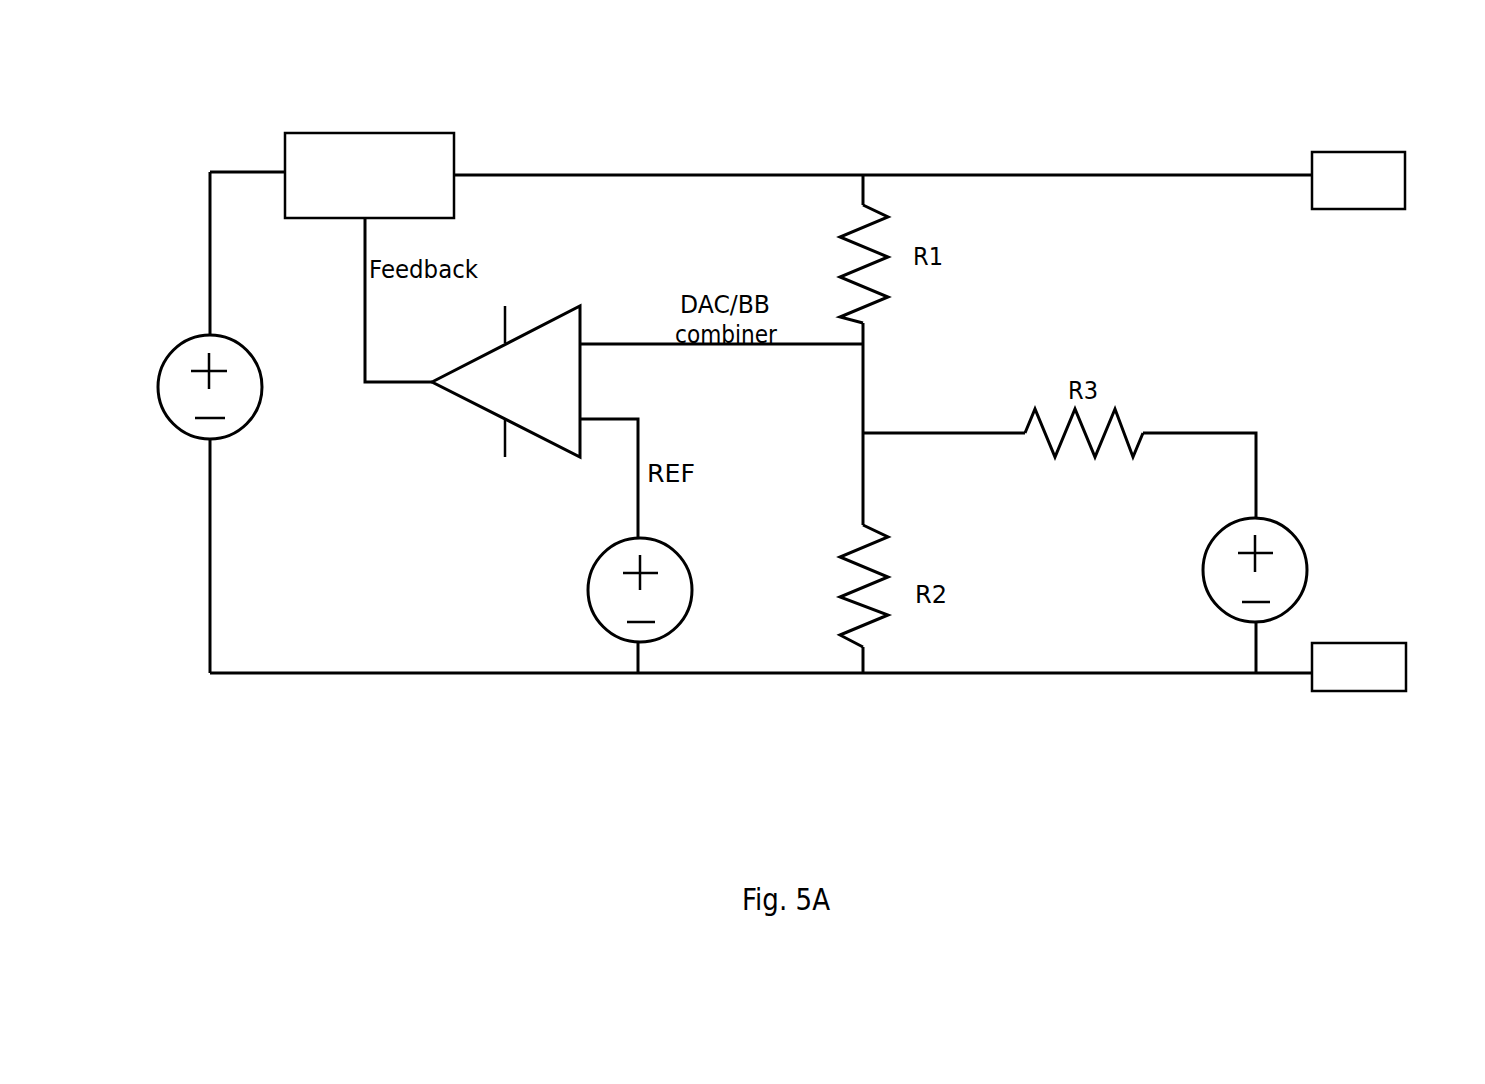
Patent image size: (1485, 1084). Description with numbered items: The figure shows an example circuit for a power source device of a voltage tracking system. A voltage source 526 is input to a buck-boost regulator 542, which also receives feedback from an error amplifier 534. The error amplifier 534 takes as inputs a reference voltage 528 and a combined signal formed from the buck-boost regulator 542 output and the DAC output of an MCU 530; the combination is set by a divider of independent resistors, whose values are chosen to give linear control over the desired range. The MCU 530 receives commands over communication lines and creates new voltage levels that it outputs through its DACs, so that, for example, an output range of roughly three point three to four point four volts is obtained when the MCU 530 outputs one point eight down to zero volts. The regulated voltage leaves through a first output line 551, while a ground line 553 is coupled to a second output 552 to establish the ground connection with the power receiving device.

The voltage source 526 is at (200, 333).
The reference voltage 528 is at (590, 603).
The MCU 530 is at (1307, 592).
The error amplifier 534 is at (468, 401).
The buck-boost regulator 542 is at (369, 175).
The first output line 551 is at (1368, 152).
The second output 552 is at (1338, 691).
The ground line 553 is at (955, 673).